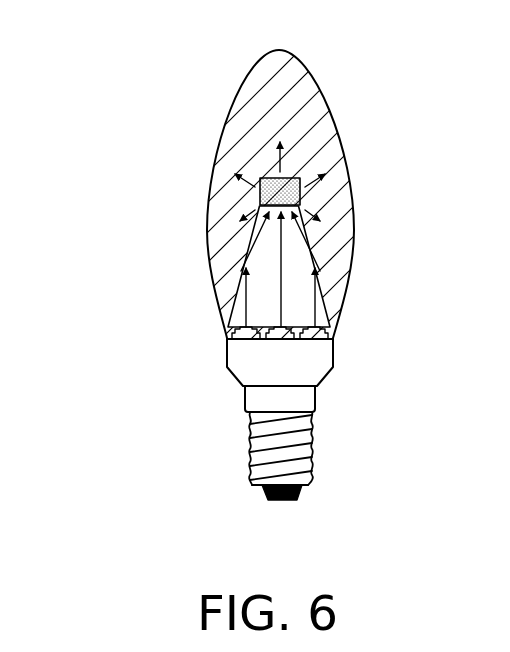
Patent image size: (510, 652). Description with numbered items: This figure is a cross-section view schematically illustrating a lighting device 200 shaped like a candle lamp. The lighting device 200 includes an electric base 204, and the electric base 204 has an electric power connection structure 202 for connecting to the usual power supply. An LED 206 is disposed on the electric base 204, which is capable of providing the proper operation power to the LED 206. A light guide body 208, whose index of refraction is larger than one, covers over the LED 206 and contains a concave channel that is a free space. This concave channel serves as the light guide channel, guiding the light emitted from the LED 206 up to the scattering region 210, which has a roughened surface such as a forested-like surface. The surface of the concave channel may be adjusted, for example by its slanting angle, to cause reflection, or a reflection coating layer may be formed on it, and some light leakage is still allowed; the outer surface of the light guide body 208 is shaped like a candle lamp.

The lighting device 200 is at (185, 82).
The electric power connection structure 202 is at (267, 437).
The electric base 204 is at (243, 353).
The LED 206 is at (333, 333).
The light guide body 208 is at (313, 108).
The scattering region 210 is at (300, 190).